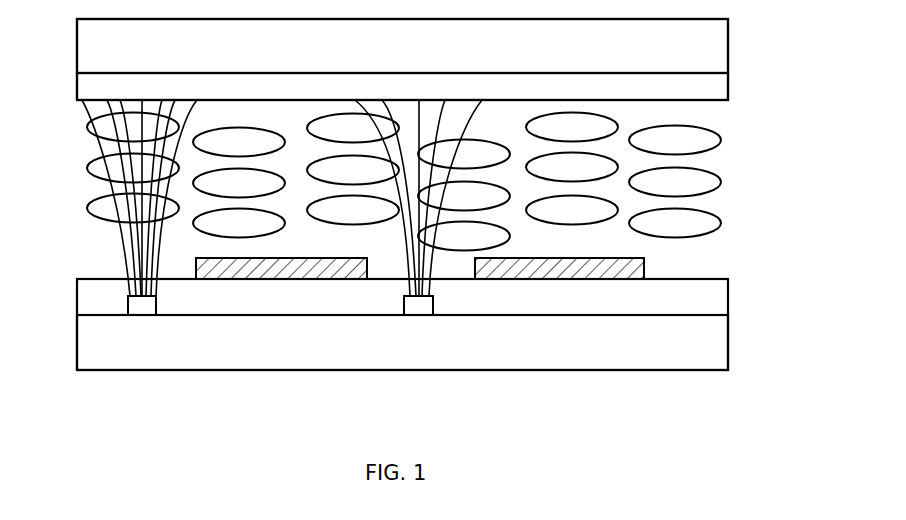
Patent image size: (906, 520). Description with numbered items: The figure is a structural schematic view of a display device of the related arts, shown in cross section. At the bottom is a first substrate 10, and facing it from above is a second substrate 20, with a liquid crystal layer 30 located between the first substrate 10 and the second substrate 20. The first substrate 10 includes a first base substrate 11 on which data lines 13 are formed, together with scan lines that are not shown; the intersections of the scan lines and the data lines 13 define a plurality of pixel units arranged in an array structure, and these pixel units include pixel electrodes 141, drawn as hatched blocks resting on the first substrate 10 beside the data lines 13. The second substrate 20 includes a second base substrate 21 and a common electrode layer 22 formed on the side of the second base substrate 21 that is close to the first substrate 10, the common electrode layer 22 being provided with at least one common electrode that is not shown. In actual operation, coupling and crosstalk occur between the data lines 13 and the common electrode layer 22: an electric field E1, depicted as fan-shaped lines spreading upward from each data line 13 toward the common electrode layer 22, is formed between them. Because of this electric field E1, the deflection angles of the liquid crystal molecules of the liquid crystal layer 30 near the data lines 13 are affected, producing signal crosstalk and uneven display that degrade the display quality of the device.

The first substrate 10 is at (70, 258).
The first base substrate 11 is at (700, 338).
The data lines 13 is at (419, 308).
The pixel electrodes 141 is at (545, 265).
The second substrate 20 is at (70, 15).
The second base substrate 21 is at (703, 42).
The common electrode layer 22 is at (703, 88).
The liquid crystal layer 30 is at (700, 186).
The electric field E1 is at (103, 150).